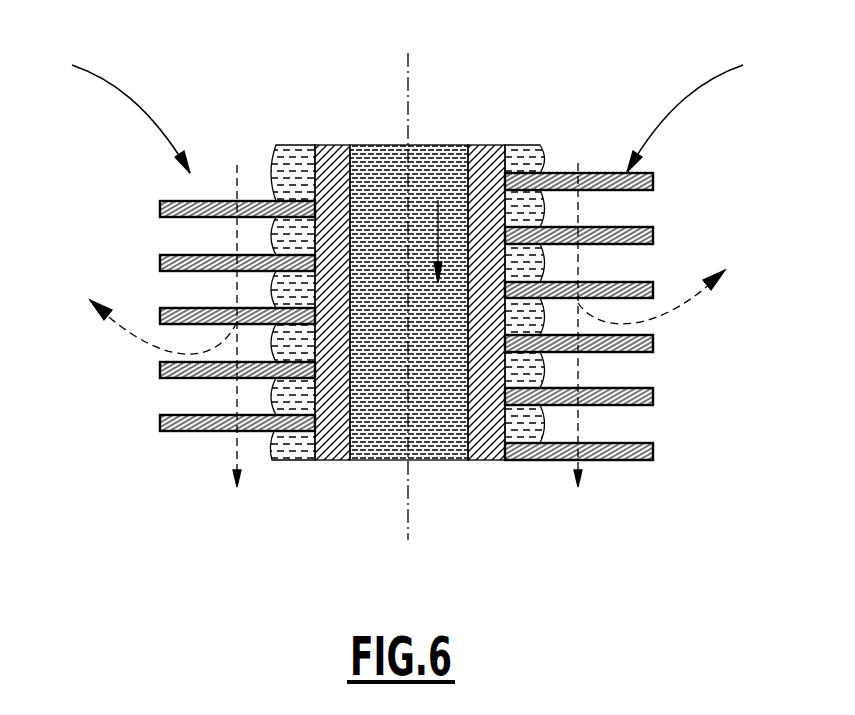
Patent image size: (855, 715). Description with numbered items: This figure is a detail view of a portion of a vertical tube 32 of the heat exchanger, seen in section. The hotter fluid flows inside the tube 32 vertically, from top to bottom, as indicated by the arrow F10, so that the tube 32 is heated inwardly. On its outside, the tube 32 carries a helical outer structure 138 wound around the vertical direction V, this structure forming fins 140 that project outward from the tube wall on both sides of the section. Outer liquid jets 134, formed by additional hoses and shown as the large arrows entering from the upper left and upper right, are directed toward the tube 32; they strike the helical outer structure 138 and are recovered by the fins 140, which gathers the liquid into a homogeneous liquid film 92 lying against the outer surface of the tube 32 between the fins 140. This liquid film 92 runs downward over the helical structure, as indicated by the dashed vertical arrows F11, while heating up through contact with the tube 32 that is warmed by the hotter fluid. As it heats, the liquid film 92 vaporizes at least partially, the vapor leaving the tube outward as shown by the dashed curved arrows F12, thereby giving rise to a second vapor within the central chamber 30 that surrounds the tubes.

The central chamber 30 is at (432, 309).
The tube 32 is at (483, 182).
The liquid film 92 is at (522, 208).
The outer liquid jets 134 is at (121, 83).
The helical outer structure 138 is at (610, 465).
The fins 140 is at (447, 365).
The vertical direction V is at (408, 97).
The hotter fluid flow arrow F10 is at (440, 247).
The liquid film flow arrow F11 is at (237, 290).
The evaporation arrow F12 is at (138, 343).